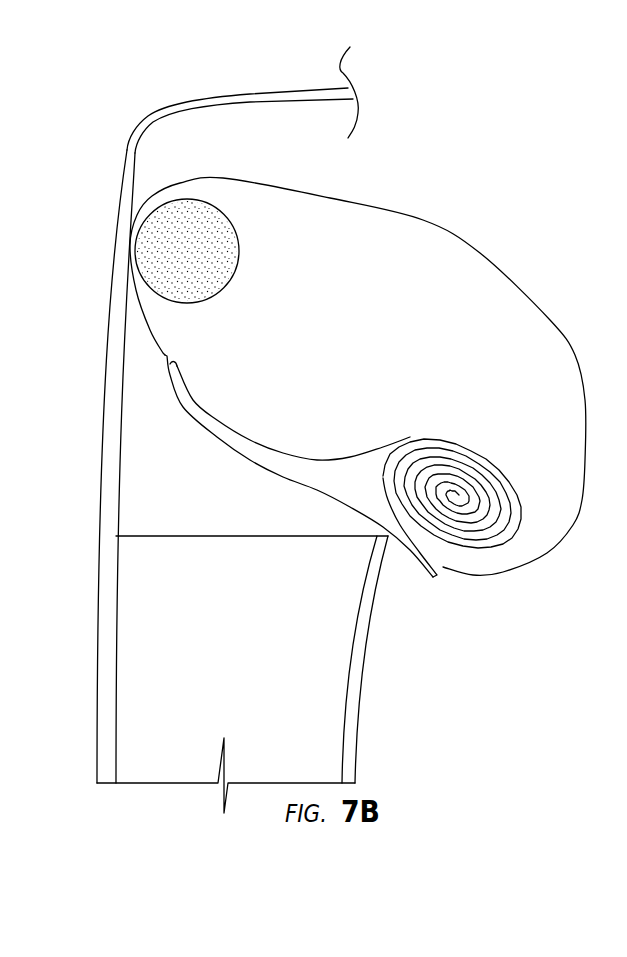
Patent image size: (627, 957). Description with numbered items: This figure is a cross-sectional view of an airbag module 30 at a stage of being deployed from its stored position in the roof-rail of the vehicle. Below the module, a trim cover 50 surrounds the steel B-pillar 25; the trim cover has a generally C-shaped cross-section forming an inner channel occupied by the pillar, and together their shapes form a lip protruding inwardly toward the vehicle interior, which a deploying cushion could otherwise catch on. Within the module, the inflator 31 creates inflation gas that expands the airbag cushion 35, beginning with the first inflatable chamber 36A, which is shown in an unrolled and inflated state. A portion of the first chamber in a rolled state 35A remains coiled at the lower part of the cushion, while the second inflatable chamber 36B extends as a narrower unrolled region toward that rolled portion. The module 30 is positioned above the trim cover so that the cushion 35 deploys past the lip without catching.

The B-pillar 25 is at (106, 635).
The airbag module 30 is at (428, 170).
The inflator 31 is at (193, 217).
The airbag cushion 35 is at (455, 541).
The first chamber in rolled state 35A is at (505, 463).
The first inflatable chamber 36A is at (365, 333).
The second inflatable chamber 36B is at (285, 480).
The trim cover 50 is at (368, 605).